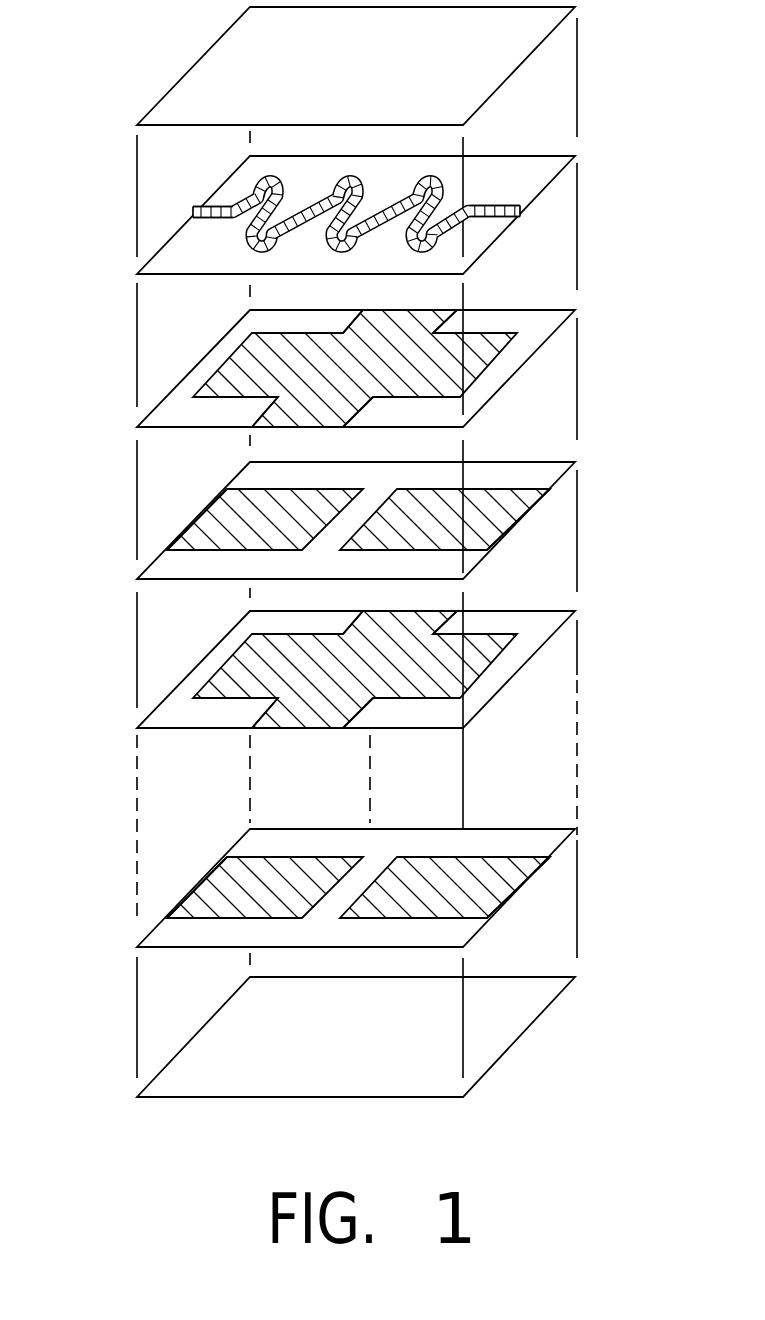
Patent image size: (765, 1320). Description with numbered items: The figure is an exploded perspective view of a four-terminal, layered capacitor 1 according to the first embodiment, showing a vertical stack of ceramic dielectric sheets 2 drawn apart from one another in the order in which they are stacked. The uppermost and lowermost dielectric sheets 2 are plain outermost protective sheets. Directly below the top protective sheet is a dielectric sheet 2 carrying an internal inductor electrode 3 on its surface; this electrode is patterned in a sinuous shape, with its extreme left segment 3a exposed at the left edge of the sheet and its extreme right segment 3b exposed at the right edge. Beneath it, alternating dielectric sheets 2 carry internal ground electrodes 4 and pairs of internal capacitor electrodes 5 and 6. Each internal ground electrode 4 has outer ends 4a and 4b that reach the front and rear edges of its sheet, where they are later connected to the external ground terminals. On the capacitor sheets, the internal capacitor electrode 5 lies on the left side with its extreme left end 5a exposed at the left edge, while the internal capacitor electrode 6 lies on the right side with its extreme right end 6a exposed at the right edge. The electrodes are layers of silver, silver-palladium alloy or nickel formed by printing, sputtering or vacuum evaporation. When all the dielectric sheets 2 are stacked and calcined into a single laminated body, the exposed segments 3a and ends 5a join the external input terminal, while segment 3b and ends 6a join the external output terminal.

The four-terminal, layered capacitor 1 is at (93, 77).
The dielectric sheet 2 is at (515, 60).
The internal inductor electrode 3 is at (342, 178).
The extreme left segment 3a is at (222, 200).
The extreme right segment 3b is at (493, 220).
The internal ground electrode 4 is at (238, 363).
The outer end 4a is at (293, 422).
The outer end 4b is at (428, 310).
The internal capacitor electrode 5 is at (260, 523).
The extreme left end 5a is at (210, 525).
The internal capacitor electrode 6 is at (403, 533).
The extreme right end 6a is at (503, 525).